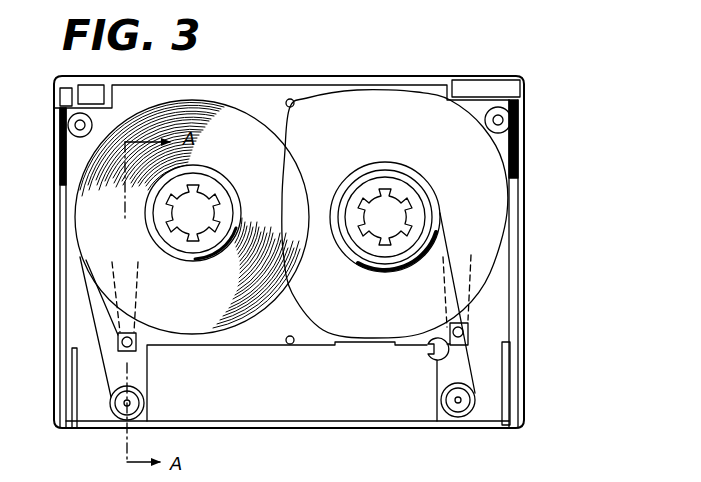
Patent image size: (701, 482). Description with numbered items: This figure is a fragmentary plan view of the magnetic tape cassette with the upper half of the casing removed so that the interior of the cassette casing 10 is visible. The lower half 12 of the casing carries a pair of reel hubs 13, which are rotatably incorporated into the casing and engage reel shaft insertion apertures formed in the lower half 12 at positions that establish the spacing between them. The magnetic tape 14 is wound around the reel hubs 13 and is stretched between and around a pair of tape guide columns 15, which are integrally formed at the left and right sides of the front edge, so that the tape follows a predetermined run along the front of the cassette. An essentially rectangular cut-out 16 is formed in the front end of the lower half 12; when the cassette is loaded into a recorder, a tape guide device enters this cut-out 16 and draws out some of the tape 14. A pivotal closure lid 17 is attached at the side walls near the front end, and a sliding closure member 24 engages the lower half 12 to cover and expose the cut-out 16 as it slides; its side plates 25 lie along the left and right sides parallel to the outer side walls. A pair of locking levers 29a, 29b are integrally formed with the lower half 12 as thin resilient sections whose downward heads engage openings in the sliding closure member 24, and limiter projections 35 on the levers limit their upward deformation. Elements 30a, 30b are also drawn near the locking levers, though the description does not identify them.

The cassette casing 10 is at (374, 59).
The lower half 12 is at (503, 307).
The reel hubs 13 is at (223, 189).
The magnetic tape 14 is at (230, 113).
The tape guide columns 15 is at (145, 410).
The cut-out 16 is at (277, 345).
The pivotal closure lid 17 is at (372, 425).
The sliding closure member 24 is at (307, 407).
The side plates 25 is at (63, 235).
The locking lever 29a is at (468, 314).
The locking lever 29b is at (147, 343).
The brake arm 30a is at (468, 279).
The brake arm 30b is at (117, 327).
The limiter projections 35 is at (117, 342).